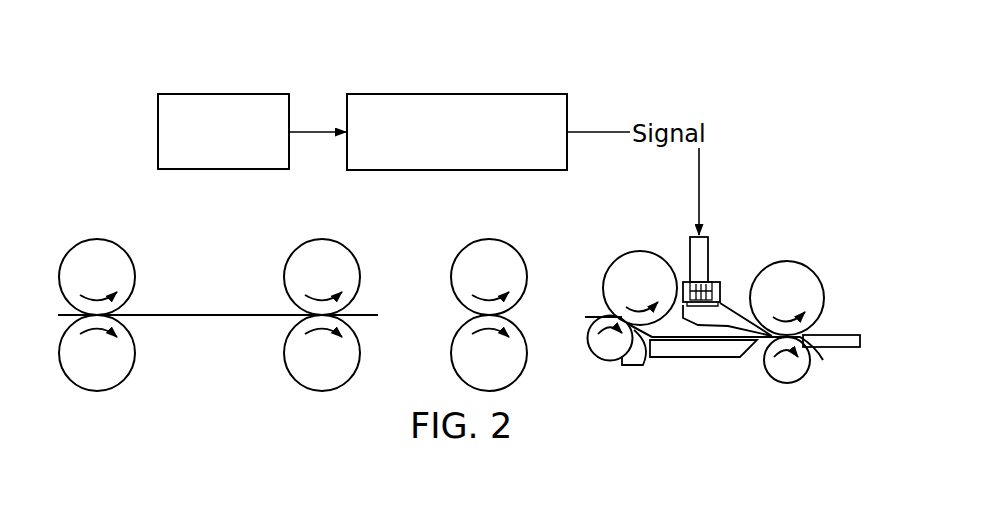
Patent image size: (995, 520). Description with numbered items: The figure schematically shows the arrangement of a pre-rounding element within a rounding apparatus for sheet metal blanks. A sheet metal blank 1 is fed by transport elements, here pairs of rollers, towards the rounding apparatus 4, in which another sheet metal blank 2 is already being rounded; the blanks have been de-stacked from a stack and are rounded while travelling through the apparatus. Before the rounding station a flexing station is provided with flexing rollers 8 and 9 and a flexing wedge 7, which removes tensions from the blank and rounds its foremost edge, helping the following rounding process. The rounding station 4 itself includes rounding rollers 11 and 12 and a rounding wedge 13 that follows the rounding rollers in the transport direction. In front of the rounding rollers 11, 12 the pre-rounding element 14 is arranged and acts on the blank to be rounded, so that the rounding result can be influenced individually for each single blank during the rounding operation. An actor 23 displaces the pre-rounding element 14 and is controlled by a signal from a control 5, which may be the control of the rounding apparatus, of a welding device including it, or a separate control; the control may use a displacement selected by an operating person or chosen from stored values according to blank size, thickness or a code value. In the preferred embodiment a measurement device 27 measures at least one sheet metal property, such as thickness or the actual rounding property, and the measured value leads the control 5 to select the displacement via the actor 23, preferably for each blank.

The measurement device 27 is at (240, 108).
The control 5 is at (469, 107).
The sheet metal blank 1 is at (216, 314).
The flexing roller 9 is at (632, 273).
The flexing roller 8 is at (598, 350).
The sheet metal blank 2 is at (598, 318).
The flexing wedge 7 is at (632, 363).
The rounding apparatus 4 is at (707, 373).
The actor 23 is at (698, 250).
The pre-rounding element 14 is at (722, 273).
The rounding roller 11 is at (797, 287).
The rounding roller 12 is at (780, 371).
The rounding wedge 13 is at (838, 339).